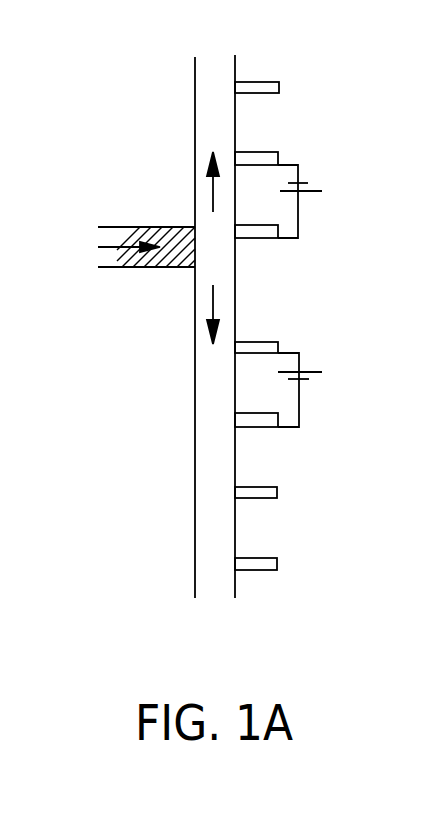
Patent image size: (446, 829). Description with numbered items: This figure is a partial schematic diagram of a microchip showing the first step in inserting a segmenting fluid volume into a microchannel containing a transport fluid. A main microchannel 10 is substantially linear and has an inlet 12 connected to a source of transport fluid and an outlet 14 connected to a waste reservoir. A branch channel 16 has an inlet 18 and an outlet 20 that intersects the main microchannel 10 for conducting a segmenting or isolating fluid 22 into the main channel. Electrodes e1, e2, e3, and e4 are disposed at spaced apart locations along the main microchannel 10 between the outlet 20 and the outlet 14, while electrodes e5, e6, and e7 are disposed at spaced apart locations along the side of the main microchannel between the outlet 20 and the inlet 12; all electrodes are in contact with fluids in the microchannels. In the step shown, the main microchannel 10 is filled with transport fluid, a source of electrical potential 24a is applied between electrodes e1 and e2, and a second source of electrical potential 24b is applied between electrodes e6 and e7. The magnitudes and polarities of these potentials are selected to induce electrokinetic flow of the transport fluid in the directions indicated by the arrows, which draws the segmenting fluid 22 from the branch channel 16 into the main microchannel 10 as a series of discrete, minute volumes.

The main microchannel 10 is at (193, 418).
The inlet 12 is at (195, 62).
The outlet 14 is at (194, 578).
The branch channel 16 is at (130, 227).
The inlet 18 is at (108, 267).
The outlet 20 is at (167, 268).
The segmenting fluid 22 is at (172, 227).
The source of electrical potential 24a is at (311, 381).
The second source of electrical potential 24b is at (312, 184).
The electrode e1 is at (279, 342).
The electrode e2 is at (279, 413).
The electrode e3 is at (279, 487).
The electrode e4 is at (279, 558).
The electrode e5 is at (280, 82).
The electrode e6 is at (279, 152).
The electrode e7 is at (279, 225).